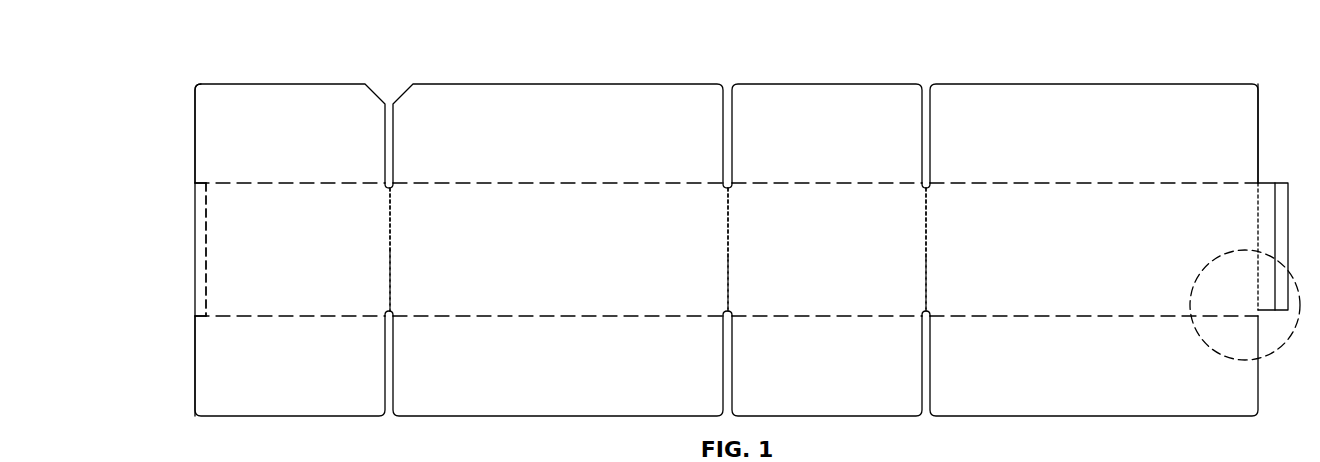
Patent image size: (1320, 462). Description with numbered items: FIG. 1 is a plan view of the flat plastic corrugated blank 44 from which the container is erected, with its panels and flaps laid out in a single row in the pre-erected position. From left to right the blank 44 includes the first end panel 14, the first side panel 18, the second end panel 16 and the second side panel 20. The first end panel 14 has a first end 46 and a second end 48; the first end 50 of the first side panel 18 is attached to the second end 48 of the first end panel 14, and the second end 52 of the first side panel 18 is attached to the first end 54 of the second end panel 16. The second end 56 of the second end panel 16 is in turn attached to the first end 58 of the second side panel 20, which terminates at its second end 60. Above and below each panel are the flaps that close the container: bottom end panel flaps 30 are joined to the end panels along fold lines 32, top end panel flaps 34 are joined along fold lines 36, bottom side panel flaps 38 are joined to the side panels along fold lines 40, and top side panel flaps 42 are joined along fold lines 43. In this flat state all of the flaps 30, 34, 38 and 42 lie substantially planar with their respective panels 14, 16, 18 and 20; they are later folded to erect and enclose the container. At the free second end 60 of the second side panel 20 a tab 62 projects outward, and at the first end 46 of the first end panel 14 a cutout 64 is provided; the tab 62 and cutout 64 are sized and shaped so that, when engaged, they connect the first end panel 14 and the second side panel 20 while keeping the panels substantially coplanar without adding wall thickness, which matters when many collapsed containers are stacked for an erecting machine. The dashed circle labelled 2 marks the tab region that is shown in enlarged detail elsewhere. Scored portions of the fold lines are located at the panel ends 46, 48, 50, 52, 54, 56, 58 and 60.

The detail circle for FIG. 2 is at (1277, 352).
The first end panel 14 is at (292, 253).
The second end panel 16 is at (794, 246).
The first side panel 18 is at (550, 253).
The second side panel 20 is at (1037, 253).
The bottom end panel flaps 30 is at (292, 375).
The fold lines 32 is at (271, 314).
The top end panel flaps 34 is at (292, 145).
The fold lines 36 is at (298, 186).
The bottom side panel flaps 38 is at (550, 375).
The fold lines 40 is at (608, 314).
The top side panel flaps 42 is at (550, 145).
The fold lines 43 is at (581, 181).
The plastic blank 44 is at (1191, 64).
The first end of first end panel 46 is at (218, 260).
The second end of first end panel 48 is at (390, 250).
The first end of first side panel 50 is at (390, 268).
The second end of first side panel 52 is at (728, 258).
The first end of second end panel 54 is at (728, 272).
The second end of second end panel 56 is at (926, 258).
The first end of second side panel 58 is at (926, 272).
The second end of second side panel 60 is at (1258, 225).
The tab 62 is at (1282, 182).
The cutout 64 is at (200, 250).